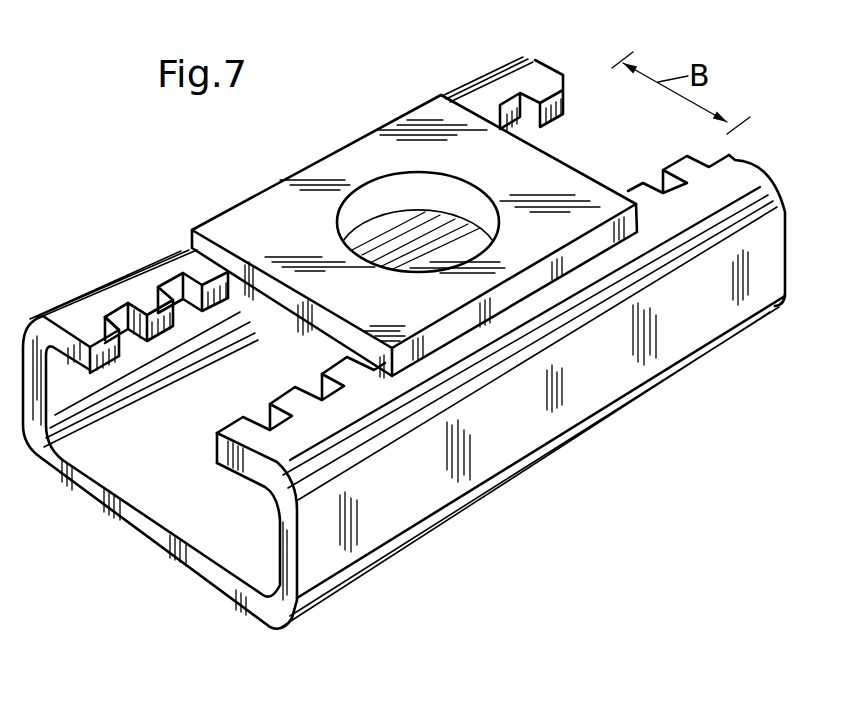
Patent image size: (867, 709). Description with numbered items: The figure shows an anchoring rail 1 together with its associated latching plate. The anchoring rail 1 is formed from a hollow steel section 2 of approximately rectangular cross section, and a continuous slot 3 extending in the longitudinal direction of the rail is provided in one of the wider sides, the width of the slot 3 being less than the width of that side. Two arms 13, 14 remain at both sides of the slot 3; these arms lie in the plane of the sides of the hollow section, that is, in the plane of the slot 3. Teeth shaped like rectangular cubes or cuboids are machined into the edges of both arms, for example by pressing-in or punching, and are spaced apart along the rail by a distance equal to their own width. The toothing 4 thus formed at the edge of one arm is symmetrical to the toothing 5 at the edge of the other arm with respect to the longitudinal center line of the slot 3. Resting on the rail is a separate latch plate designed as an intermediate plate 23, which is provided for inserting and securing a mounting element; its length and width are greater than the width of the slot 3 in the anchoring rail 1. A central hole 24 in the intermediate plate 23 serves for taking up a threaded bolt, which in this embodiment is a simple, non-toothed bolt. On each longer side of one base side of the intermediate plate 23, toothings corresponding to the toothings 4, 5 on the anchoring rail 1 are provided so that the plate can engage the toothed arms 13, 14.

The anchoring rail 1 is at (404, 343).
The hollow steel section 2 is at (118, 517).
The slot 3 is at (599, 125).
The toothing 4 is at (192, 325).
The toothing 5 is at (648, 164).
The arm 13 is at (355, 372).
The arm 14 is at (135, 288).
The intermediate plate 23 is at (338, 168).
The central hole 24 is at (397, 230).